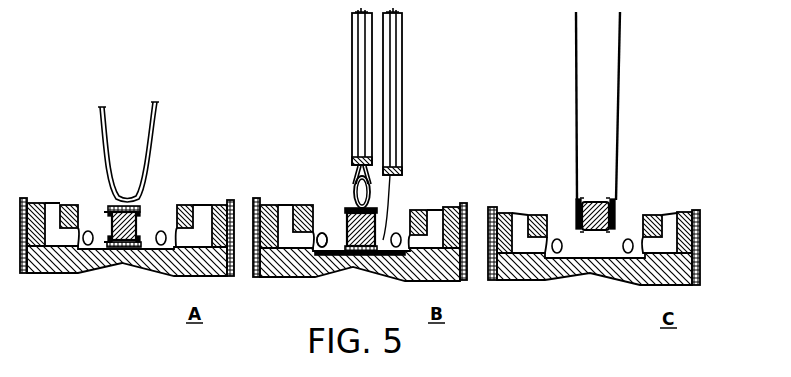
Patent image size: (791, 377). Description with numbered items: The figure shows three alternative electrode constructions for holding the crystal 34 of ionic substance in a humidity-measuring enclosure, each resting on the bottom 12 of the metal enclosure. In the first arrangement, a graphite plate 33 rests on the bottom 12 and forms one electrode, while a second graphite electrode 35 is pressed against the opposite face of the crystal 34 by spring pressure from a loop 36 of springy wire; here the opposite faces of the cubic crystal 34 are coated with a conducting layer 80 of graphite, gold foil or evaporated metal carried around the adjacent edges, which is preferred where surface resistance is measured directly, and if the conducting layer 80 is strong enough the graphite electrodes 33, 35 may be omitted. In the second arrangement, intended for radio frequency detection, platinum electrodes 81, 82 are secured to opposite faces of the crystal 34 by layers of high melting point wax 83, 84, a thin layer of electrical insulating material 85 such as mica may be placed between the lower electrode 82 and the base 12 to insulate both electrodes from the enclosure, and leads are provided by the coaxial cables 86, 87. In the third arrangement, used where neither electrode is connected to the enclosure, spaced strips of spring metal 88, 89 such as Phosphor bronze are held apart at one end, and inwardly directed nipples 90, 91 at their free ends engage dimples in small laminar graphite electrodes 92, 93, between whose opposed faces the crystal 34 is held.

The bottom of the enclosure 12 is at (55, 268).
The graphite plate 33 is at (122, 262).
The crystal 34 is at (134, 232).
The second graphite electrode 35 is at (138, 206).
The loop of springy wire 36 is at (157, 140).
The conducting layer 80 is at (107, 242).
The platinum electrode 81 is at (351, 206).
The platinum electrode 82 is at (317, 240).
The layer of high melting point wax 83 is at (346, 212).
The layer of high melting point wax 84 is at (360, 247).
The layer of electrical insulating material 85 is at (348, 256).
The coaxial cable 86 is at (352, 31).
The coaxial cable 87 is at (402, 31).
The strip of spring metal 88 is at (576, 72).
The strip of spring metal 89 is at (619, 70).
The nipple 90 is at (577, 220).
The nipple 91 is at (615, 213).
The laminar electrode 92 is at (580, 198).
The laminar electrode 93 is at (612, 203).